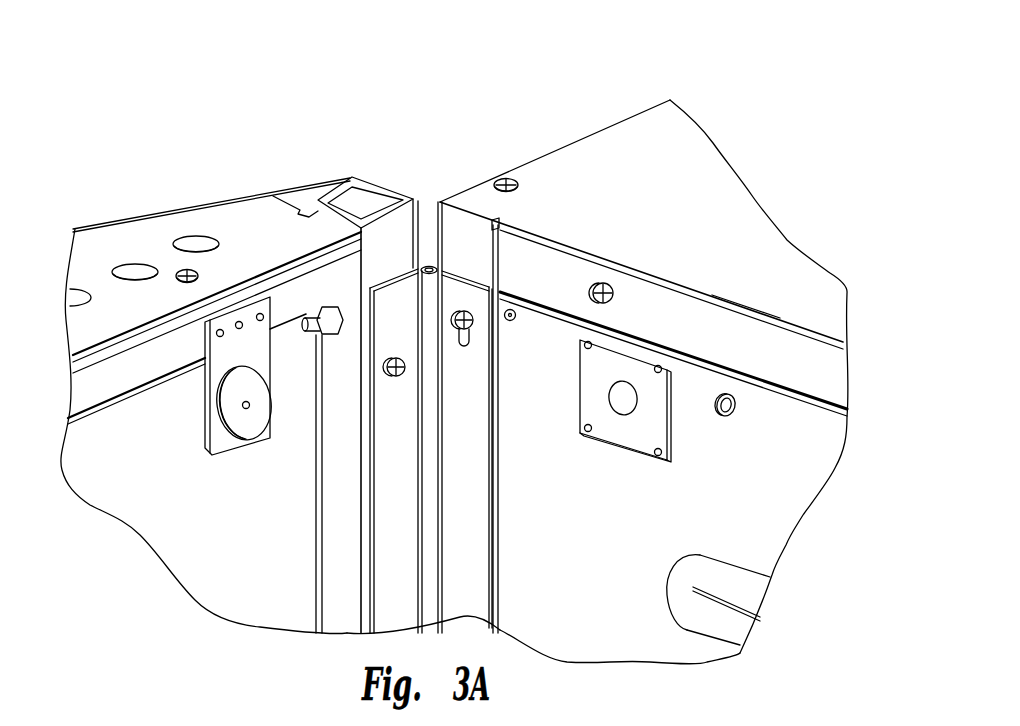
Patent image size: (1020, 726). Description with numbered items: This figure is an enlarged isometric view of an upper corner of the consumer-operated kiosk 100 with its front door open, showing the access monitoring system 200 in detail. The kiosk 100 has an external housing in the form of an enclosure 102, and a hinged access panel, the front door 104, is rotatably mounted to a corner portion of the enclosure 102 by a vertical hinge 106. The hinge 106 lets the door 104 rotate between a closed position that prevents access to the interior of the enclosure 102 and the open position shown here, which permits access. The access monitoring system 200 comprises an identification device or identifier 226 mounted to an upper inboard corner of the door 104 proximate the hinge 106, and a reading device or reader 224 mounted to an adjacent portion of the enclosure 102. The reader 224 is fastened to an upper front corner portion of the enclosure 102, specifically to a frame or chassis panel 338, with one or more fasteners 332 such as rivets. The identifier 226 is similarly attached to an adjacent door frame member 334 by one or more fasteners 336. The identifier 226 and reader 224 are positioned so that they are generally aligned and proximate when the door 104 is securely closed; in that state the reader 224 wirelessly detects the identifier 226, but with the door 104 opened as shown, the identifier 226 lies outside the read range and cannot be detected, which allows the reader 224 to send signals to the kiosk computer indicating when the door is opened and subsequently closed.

The consumer-operated kiosk 100 is at (757, 102).
The enclosure 102 is at (753, 233).
The front door 104 is at (207, 222).
The vertical hinge 106 is at (428, 265).
The access monitoring system 200 is at (308, 557).
The reader 224 is at (627, 443).
The identifier 226 is at (243, 428).
The fasteners 332 is at (657, 362).
The door frame member 334 is at (110, 380).
The fasteners 336 is at (222, 332).
The frame or chassis panel 338 is at (783, 497).